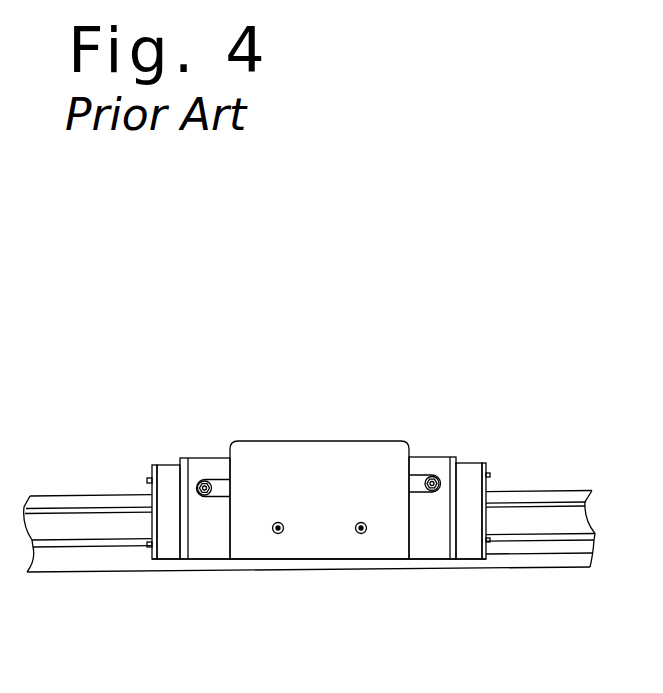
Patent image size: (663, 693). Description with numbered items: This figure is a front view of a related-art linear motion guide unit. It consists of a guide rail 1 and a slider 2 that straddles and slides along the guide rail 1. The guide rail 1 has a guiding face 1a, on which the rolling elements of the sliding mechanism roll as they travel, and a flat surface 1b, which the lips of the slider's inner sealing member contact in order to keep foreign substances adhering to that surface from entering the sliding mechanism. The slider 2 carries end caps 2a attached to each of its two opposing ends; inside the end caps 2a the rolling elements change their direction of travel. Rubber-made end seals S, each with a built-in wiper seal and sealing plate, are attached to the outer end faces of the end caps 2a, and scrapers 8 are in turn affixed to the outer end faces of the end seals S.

The guide rail 1 is at (311, 482).
The guiding face 1a is at (75, 523).
The flat surface 1b is at (523, 490).
The slider 2 is at (327, 440).
The end caps 2a is at (197, 470).
The scrapers 8 is at (155, 560).
The end seals S is at (171, 560).